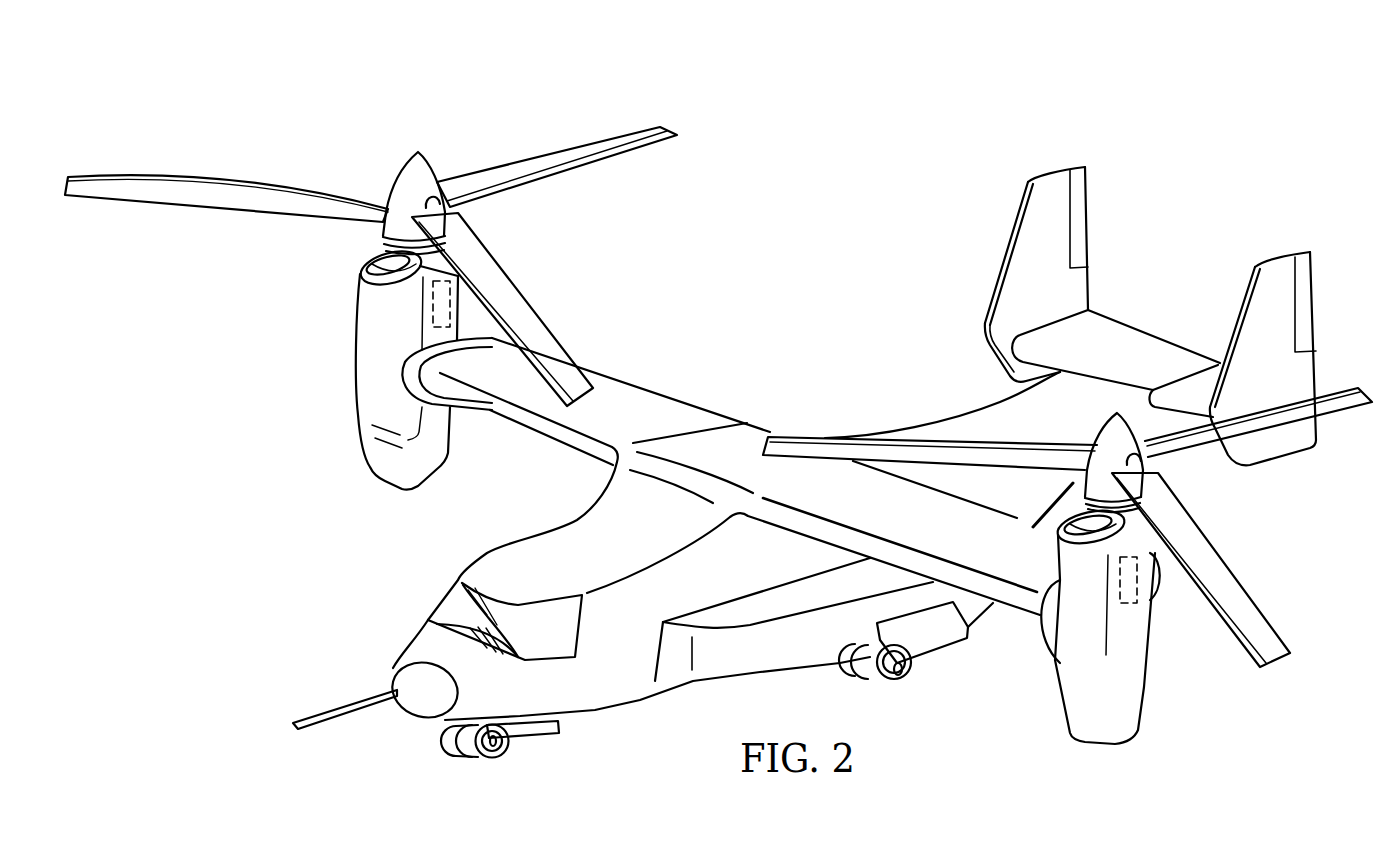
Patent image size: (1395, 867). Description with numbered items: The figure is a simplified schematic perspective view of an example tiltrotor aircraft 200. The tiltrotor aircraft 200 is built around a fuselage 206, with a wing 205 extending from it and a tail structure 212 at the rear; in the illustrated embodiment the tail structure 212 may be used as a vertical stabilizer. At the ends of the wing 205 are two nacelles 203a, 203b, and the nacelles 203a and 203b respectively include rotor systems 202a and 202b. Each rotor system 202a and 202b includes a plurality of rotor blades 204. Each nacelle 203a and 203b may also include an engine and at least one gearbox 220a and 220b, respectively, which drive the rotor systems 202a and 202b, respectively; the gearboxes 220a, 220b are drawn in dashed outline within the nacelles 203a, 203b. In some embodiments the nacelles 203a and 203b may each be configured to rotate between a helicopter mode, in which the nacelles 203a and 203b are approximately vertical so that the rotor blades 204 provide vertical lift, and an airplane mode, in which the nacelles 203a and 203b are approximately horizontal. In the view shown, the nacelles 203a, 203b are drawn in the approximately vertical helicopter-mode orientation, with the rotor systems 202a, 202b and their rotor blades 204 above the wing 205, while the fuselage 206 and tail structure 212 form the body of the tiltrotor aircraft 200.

The tiltrotor aircraft 200 is at (606, 78).
The rotor system 202a is at (405, 170).
The rotor system 202b is at (1100, 435).
The nacelle 203a is at (355, 330).
The nacelle 203b is at (1143, 698).
The rotor blades 204 is at (560, 172).
The wing 205 is at (657, 387).
The fuselage 206 is at (630, 700).
The tail structure 212 is at (1123, 322).
The gearbox 220a is at (452, 312).
The gearbox 220b is at (1137, 603).